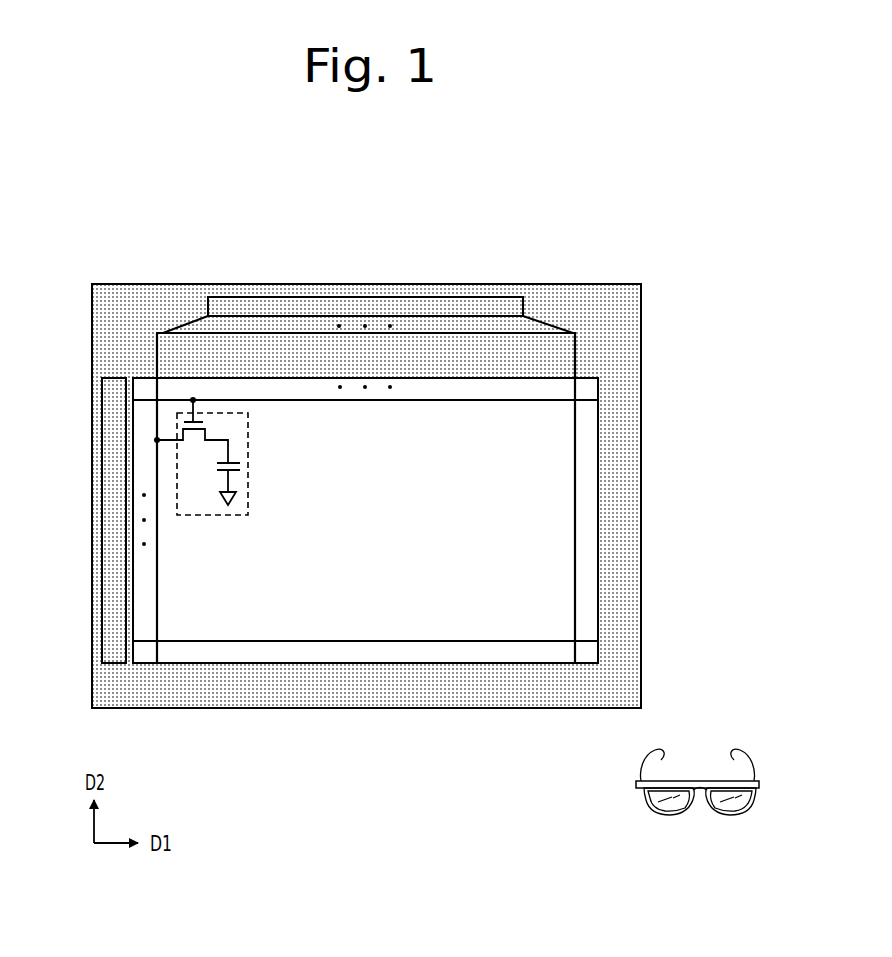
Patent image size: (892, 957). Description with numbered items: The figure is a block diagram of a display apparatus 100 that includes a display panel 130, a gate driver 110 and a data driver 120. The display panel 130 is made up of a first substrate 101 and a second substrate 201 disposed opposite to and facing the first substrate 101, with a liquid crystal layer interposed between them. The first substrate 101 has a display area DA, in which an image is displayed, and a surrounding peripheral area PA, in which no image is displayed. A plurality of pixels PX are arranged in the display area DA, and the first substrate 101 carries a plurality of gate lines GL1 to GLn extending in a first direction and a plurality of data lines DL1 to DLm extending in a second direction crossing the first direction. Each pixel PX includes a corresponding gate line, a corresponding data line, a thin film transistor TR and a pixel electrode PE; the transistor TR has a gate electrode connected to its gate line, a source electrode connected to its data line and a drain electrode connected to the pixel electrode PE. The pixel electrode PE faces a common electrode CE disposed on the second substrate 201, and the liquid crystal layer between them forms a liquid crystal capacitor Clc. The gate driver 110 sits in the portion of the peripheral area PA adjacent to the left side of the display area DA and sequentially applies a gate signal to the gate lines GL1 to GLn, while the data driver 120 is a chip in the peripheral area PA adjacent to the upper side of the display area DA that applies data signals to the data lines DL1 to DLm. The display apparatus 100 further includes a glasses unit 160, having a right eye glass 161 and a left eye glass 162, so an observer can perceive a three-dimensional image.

The display apparatus 100 is at (592, 231).
The display panel 130 is at (720, 296).
The first substrate 101 is at (641, 305).
The second substrate 201 is at (633, 402).
The data driver 120 is at (350, 296).
The gate driver 110 is at (101, 618).
The display area DA is at (560, 549).
The peripheral area PA is at (632, 624).
The gate line GL1 is at (423, 401).
The gate line GLn is at (425, 640).
The data line DL1 is at (159, 608).
The data line DLm is at (574, 495).
The pixel PX is at (248, 504).
The thin film transistor TR is at (212, 429).
The liquid crystal capacitor Clc is at (300, 440).
The pixel electrode PE is at (232, 455).
The common electrode CE is at (235, 477).
The glasses unit 160 is at (748, 876).
The right eye glass 161 is at (667, 812).
The left eye glass 162 is at (728, 812).